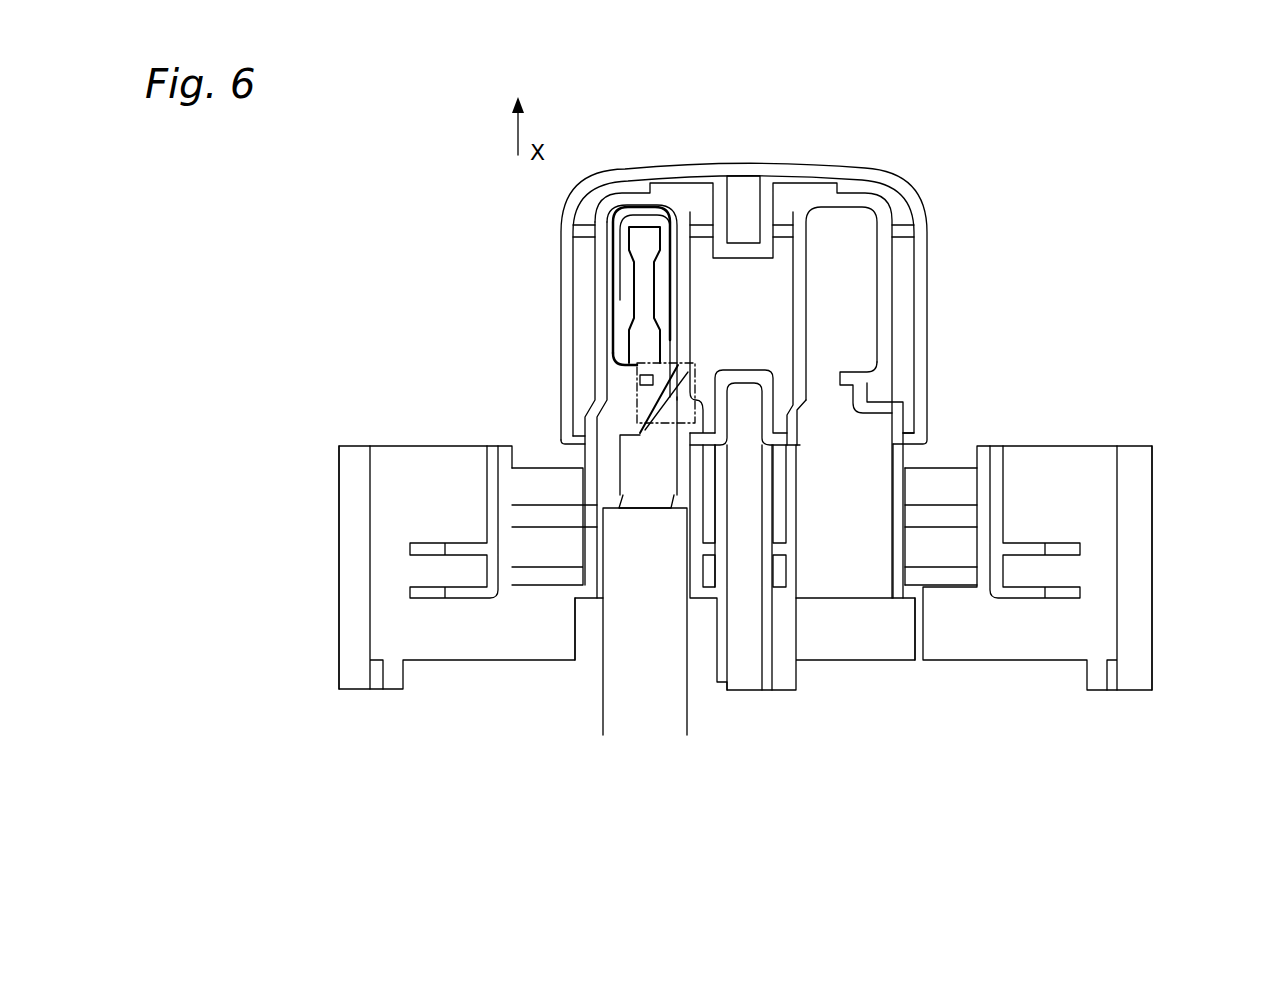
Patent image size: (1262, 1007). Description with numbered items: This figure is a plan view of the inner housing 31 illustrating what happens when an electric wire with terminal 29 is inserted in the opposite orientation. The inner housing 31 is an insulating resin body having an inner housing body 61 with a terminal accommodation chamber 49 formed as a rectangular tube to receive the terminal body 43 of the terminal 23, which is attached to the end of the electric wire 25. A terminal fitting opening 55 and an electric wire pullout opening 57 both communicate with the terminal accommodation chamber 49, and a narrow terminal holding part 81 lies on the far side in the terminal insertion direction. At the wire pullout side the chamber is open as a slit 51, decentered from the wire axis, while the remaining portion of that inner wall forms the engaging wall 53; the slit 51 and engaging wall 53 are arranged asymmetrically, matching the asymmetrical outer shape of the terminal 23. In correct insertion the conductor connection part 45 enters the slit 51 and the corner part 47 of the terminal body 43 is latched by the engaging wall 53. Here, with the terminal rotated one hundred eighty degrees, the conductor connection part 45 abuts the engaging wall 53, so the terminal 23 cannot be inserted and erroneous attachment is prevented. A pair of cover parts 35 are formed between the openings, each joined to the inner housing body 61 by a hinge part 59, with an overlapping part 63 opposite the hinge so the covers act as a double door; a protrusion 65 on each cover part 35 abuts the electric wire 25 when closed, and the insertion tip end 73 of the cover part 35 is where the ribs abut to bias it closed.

The terminal 23 is at (612, 209).
The electric wire 25 is at (600, 700).
The electric wire with terminal 29 is at (643, 738).
The inner housing 31 is at (866, 160).
The cover part 35 is at (386, 455).
The terminal body 43 is at (660, 210).
The conductor connection part 45 is at (695, 390).
The corner part 47 is at (620, 360).
The terminal accommodation chamber 49 is at (607, 285).
The slit 51 is at (625, 392).
The engaging wall 53 is at (637, 347).
The terminal fitting opening 55 is at (905, 320).
The electric wire pullout opening 57 is at (845, 660).
The hinge part 59 is at (525, 580).
The inner housing body 61 is at (917, 200).
The overlapping part 63 is at (339, 588).
The protrusion 65 is at (425, 595).
The insertion tip end 73 is at (346, 446).
The terminal holding part 81 is at (690, 212).